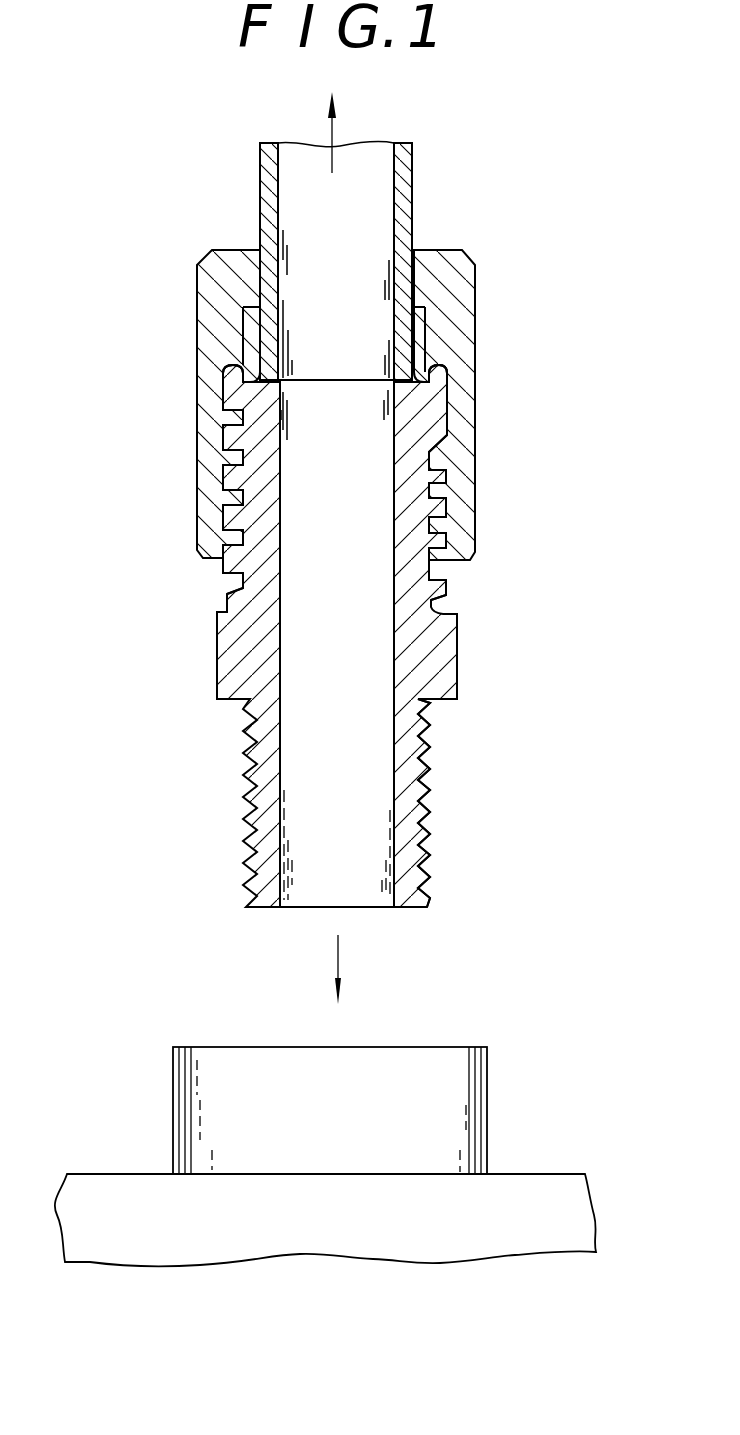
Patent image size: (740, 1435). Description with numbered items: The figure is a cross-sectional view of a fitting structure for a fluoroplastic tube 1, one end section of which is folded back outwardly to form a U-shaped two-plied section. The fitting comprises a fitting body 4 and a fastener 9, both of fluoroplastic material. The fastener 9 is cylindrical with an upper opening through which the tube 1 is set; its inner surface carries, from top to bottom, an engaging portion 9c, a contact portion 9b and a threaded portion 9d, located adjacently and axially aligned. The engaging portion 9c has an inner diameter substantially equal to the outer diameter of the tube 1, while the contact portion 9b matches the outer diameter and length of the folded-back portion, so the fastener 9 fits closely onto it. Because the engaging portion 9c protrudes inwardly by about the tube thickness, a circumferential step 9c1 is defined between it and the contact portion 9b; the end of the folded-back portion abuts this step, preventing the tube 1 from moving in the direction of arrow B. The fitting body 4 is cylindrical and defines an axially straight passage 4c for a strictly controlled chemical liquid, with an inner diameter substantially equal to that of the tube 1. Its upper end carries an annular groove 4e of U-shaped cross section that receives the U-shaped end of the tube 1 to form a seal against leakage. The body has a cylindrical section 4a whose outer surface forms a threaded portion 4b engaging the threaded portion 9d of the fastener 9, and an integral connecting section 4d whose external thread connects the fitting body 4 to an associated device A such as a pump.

The tube 1 is at (412, 224).
The fitting body 4 is at (486, 713).
The cylindrical section 4a is at (425, 488).
The threaded portion 4b is at (223, 570).
The passage 4c is at (283, 813).
The connecting section 4d is at (432, 873).
The annular groove 4e is at (245, 393).
The fastener 9 is at (506, 421).
The contact portion 9b is at (425, 345).
The engaging portion 9c is at (420, 287).
The circumferential step 9c1 is at (250, 303).
The threaded portion 9d is at (447, 517).
The associated device A is at (555, 1174).
The arrow B is at (333, 155).